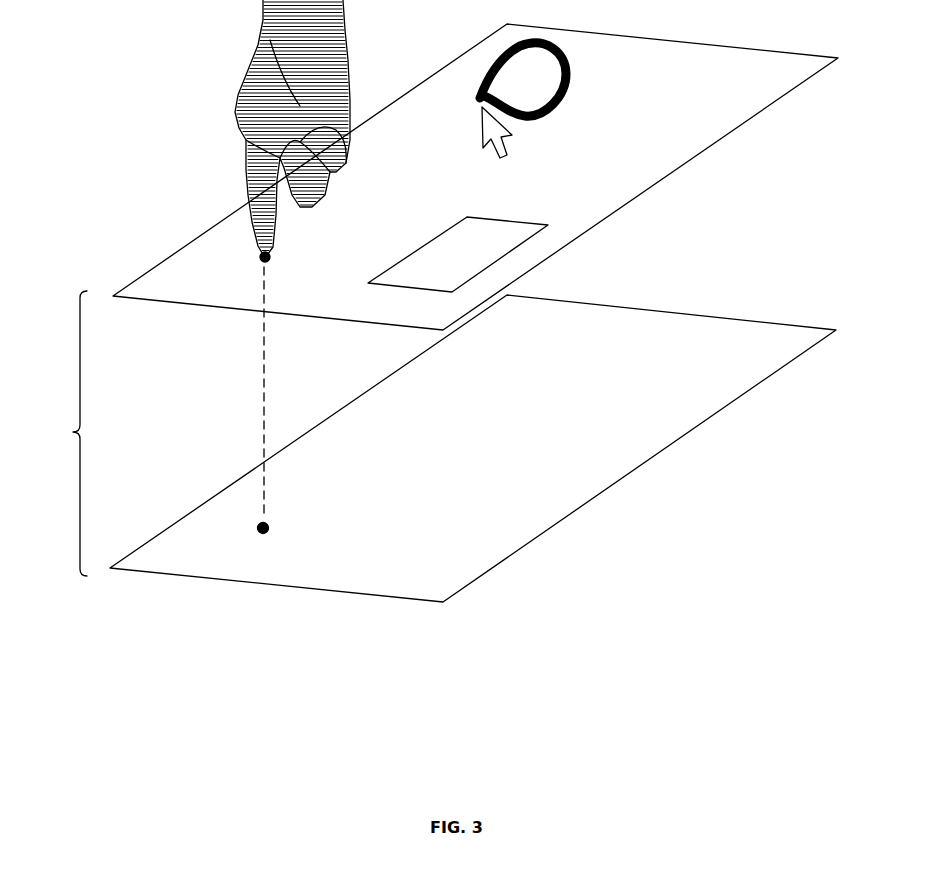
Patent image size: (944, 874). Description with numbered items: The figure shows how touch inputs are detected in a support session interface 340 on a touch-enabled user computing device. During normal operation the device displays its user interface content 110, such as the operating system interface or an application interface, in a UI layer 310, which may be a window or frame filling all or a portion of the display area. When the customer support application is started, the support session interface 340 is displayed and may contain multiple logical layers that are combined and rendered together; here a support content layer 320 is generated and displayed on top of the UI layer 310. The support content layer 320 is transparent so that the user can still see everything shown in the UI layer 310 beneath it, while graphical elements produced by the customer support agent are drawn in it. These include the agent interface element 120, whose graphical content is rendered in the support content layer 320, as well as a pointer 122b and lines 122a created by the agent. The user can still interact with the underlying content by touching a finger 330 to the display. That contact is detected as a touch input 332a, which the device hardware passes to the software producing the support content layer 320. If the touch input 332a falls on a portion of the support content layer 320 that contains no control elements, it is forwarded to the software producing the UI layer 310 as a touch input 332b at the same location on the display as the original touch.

The user interface content 110 is at (498, 452).
The agent interface element 120 is at (369, 284).
The lines 122a is at (561, 108).
The pointer 122b is at (508, 157).
The UI layer 310 is at (593, 496).
The support content layer 320 is at (642, 193).
The finger 330 is at (276, 222).
The touch input 332a is at (258, 260).
The touch input 332b is at (256, 529).
The support session interface 340 is at (62, 433).